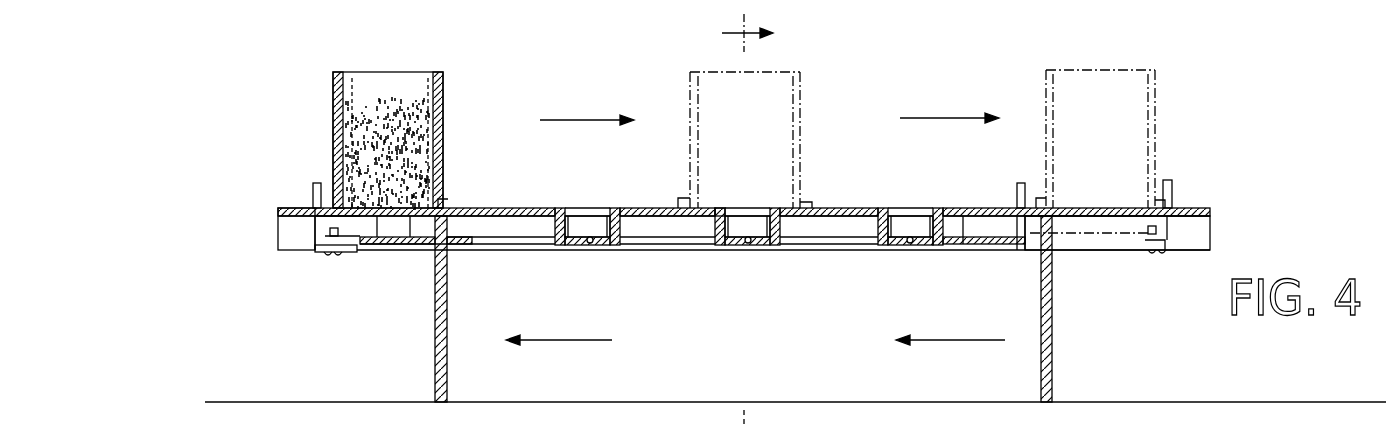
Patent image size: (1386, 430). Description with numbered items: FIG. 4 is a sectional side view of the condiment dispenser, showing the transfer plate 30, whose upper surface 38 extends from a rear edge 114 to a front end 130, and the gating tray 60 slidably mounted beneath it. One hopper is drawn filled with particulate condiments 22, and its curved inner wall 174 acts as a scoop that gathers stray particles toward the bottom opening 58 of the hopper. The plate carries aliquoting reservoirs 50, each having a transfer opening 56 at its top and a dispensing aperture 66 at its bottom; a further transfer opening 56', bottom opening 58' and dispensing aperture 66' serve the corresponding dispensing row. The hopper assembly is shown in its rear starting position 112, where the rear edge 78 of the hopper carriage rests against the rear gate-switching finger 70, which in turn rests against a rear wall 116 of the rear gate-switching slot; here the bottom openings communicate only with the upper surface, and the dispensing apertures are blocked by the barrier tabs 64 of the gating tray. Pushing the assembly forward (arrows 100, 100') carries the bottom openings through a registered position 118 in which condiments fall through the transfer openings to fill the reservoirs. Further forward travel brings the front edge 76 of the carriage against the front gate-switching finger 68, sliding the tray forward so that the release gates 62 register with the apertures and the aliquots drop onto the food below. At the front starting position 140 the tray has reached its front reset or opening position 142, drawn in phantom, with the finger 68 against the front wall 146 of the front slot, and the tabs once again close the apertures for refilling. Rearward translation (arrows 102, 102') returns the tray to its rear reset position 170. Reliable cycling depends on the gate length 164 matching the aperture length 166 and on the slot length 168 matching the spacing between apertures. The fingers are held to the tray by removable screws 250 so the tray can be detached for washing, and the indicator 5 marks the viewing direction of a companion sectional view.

The section line 5- 5 is at (747, 31).
The particulate condiments 22 is at (440, 110).
The transfer plate 30 is at (874, 200).
The upper surface 38 is at (487, 208).
The aliquoting reservoir 50 is at (598, 220).
The transfer opening 56 is at (584, 199).
The transfer opening 56' is at (747, 204).
The bottom opening 58 is at (420, 309).
The bottom opening 58' is at (728, 185).
The gating tray 60 is at (786, 274).
The release gate 62 is at (505, 247).
The barrier tab 64 is at (730, 247).
The dispensing aperture 66 is at (587, 268).
The dispensing aperture 66' is at (747, 268).
The front gate-switching finger 68 is at (625, 244).
The rear gate-switching finger 70 is at (314, 190).
The front edge 76 is at (448, 204).
The rear edge 78 is at (683, 200).
The forward direction arrow 100 is at (587, 99).
The forward direction arrow 100' is at (949, 97).
The rearward direction arrow 102 is at (559, 360).
The rearward direction arrow 102' is at (950, 360).
The rear starting position 112 is at (404, 72).
The rear edge 114 is at (278, 212).
The rear wall 116 is at (310, 224).
The registered position 118 is at (734, 72).
The front end 130 is at (1210, 232).
The front starting position 140 is at (1106, 70).
The front reset or opening position 142 is at (1172, 180).
The front wall 146 is at (1174, 198).
The gate length 164 is at (867, 5).
The aperture length 166 is at (596, 5).
The slot length 168 is at (1080, 5).
The rear reset position 170 is at (318, 254).
The curved inner wall 174 is at (352, 78).
The screw 250 is at (334, 254).